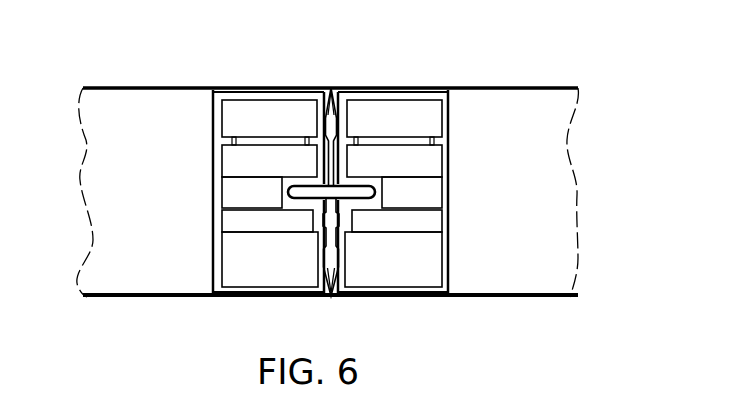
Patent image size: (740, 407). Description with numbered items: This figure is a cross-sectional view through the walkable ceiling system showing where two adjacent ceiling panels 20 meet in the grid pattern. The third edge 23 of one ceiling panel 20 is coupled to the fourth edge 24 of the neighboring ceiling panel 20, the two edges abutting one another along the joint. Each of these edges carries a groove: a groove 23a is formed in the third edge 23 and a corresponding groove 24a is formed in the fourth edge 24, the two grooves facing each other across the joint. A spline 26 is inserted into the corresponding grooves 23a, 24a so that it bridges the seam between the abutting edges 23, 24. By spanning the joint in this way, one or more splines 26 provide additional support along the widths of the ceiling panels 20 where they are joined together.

The ceiling panel 20 is at (557, 39).
The fourth edge 24 is at (247, 97).
The third edge 23 is at (416, 97).
The groove 24a is at (314, 190).
The groove 23a is at (350, 190).
The spline 26 is at (310, 190).